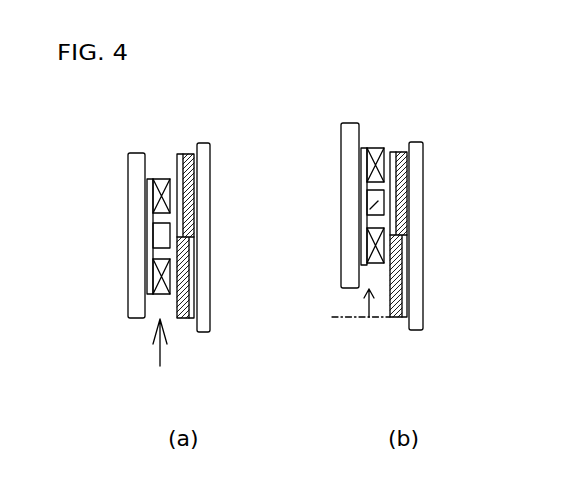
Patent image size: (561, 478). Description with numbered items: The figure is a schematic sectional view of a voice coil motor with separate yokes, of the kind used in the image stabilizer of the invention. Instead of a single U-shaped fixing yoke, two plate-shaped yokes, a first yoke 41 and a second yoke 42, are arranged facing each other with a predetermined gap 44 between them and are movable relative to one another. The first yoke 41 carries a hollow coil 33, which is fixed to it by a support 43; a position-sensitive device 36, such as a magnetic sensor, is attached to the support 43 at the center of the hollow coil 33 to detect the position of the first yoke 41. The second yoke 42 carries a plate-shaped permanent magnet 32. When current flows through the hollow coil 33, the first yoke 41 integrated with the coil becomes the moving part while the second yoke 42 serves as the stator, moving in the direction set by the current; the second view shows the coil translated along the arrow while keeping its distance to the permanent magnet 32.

The first yoke 41 is at (137, 173).
In FIG. 4b, the first yoke 41 is at (350, 173).
The hollow coil 33 is at (166, 180).
In FIG. 4b, the hollow coil 33 is at (373, 150).
The permanent magnet 32 is at (186, 155).
In FIG. 4b, the permanent magnet 32 is at (397, 152).
The second yoke 42 is at (203, 197).
In FIG. 4b, the second yoke 42 is at (417, 193).
The position-sensitive device 36 is at (166, 237).
In FIG. 4b, the position-sensitive device 36 is at (363, 209).
The support 43 is at (150, 249).
In FIG. 4b, the support 43 is at (367, 224).
The gap 44 is at (163, 356).
In FIG. 4b, the gap 44 is at (369, 303).